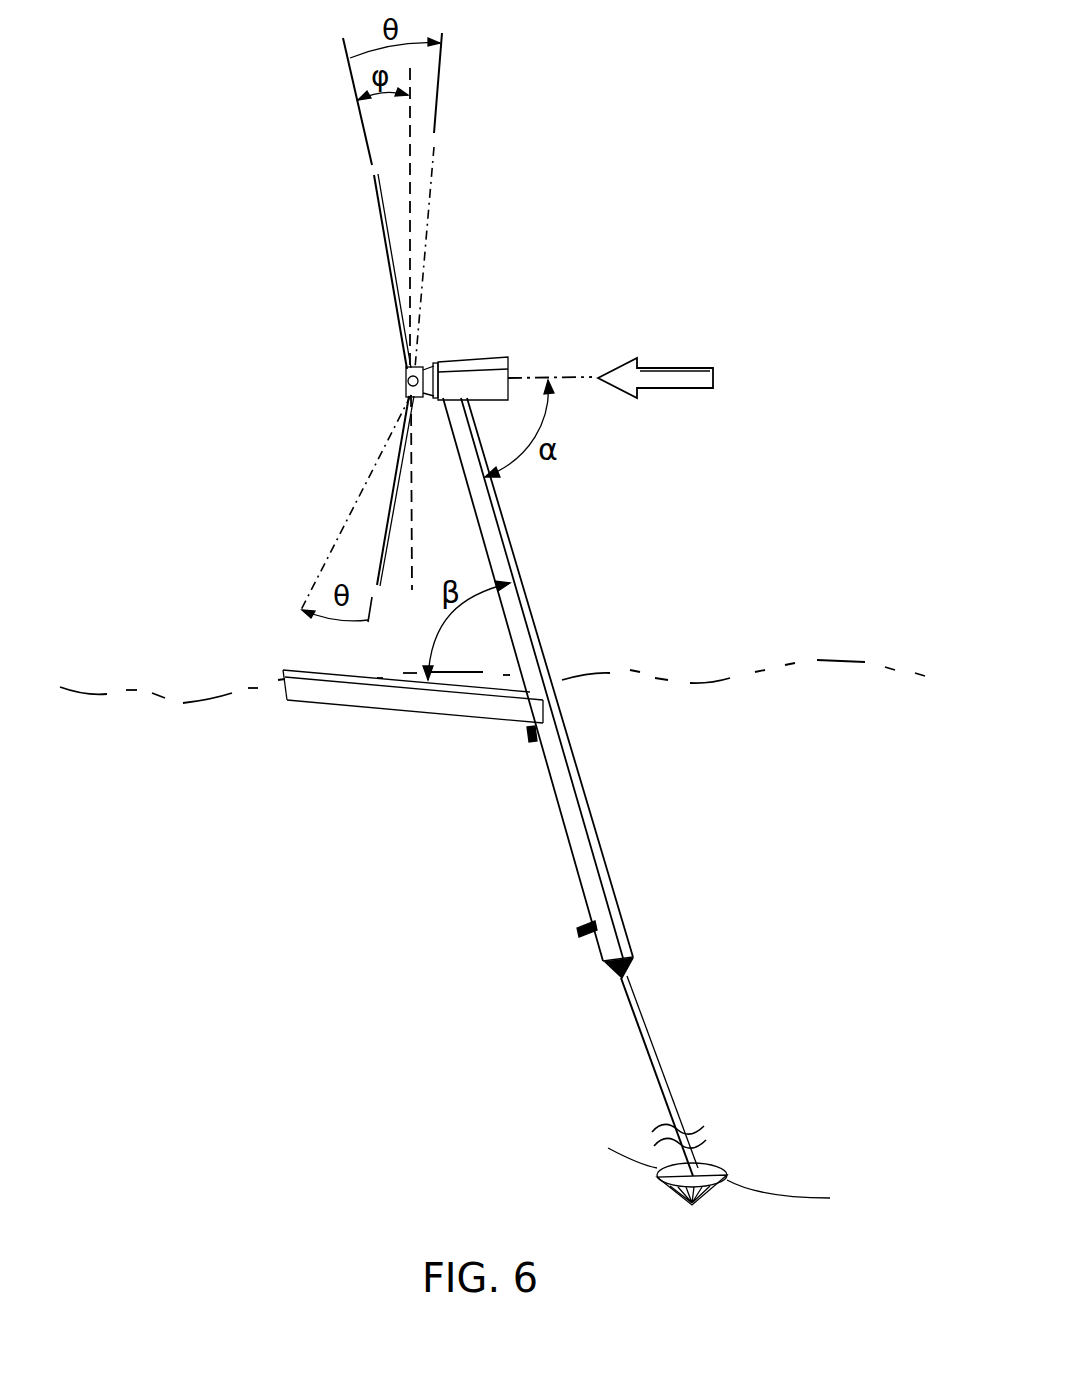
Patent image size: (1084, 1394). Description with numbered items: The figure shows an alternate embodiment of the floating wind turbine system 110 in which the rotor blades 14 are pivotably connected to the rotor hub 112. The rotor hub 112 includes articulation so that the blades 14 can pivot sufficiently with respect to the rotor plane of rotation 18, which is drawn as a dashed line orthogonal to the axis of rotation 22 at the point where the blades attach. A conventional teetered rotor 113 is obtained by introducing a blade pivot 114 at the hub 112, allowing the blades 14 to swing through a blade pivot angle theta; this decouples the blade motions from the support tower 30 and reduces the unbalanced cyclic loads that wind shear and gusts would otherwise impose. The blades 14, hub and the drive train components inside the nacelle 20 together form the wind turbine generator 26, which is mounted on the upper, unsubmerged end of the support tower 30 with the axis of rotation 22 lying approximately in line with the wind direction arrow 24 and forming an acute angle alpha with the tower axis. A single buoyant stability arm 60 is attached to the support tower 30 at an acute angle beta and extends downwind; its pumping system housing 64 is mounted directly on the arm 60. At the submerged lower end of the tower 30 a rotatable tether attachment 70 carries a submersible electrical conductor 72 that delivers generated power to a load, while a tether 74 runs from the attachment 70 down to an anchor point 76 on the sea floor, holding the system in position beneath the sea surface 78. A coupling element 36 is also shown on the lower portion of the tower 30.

The rotor blades 14 is at (383, 242).
The rotor plane of rotation 18 is at (410, 168).
The nacelle 20 is at (504, 360).
The axis of rotation 22 is at (572, 380).
The wind direction arrow 24 is at (702, 388).
The wind turbine generator 26 is at (508, 255).
The support tower 30 is at (537, 660).
The tower connection element 36 is at (577, 932).
The stability arm 60 is at (303, 690).
The pumping system housing 64 is at (528, 733).
The tether attachment 70 is at (633, 958).
The submersible electrical conductor 72 is at (665, 1060).
The tether 74 is at (648, 1052).
The anchor point 76 is at (701, 1158).
The sea surface 78 is at (848, 660).
The wind turbine system 110 is at (625, 232).
The rotor hub 112 is at (433, 363).
The teetered rotor 113 is at (317, 357).
The blade pivot 114 is at (408, 382).